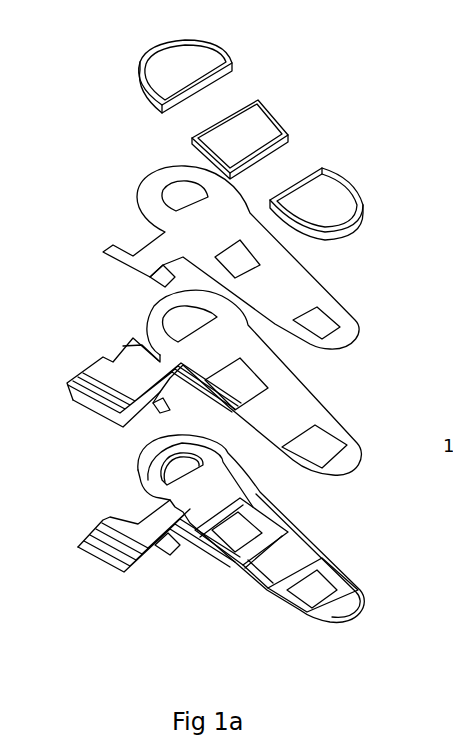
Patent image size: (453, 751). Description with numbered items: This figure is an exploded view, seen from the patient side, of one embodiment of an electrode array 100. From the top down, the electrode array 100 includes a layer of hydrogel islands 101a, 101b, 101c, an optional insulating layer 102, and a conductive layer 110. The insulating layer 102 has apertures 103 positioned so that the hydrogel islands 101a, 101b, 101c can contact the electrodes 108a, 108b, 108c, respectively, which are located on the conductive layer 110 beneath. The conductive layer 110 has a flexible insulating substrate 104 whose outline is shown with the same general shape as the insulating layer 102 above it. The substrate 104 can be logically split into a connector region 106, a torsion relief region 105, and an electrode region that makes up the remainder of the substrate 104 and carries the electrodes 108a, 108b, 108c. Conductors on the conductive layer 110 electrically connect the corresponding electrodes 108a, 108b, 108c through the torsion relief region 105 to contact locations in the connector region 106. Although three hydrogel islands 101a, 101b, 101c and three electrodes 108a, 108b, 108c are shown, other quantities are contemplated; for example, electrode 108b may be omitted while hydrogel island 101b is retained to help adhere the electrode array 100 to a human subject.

The electrode array 100 is at (92, 626).
The hydrogel island 101a is at (255, 51).
The hydrogel island 101b is at (301, 122).
The hydrogel island 101c is at (361, 185).
The insulating layer 102 is at (377, 343).
The apertures 103 is at (200, 190).
The flexible insulating substrate 104 is at (300, 413).
The torsion relief region 105 is at (123, 346).
The connector region 106 is at (86, 372).
The electrode 108a is at (213, 308).
The electrode 108b is at (253, 395).
The electrode 108c is at (323, 439).
The conductive layer 110 is at (356, 487).